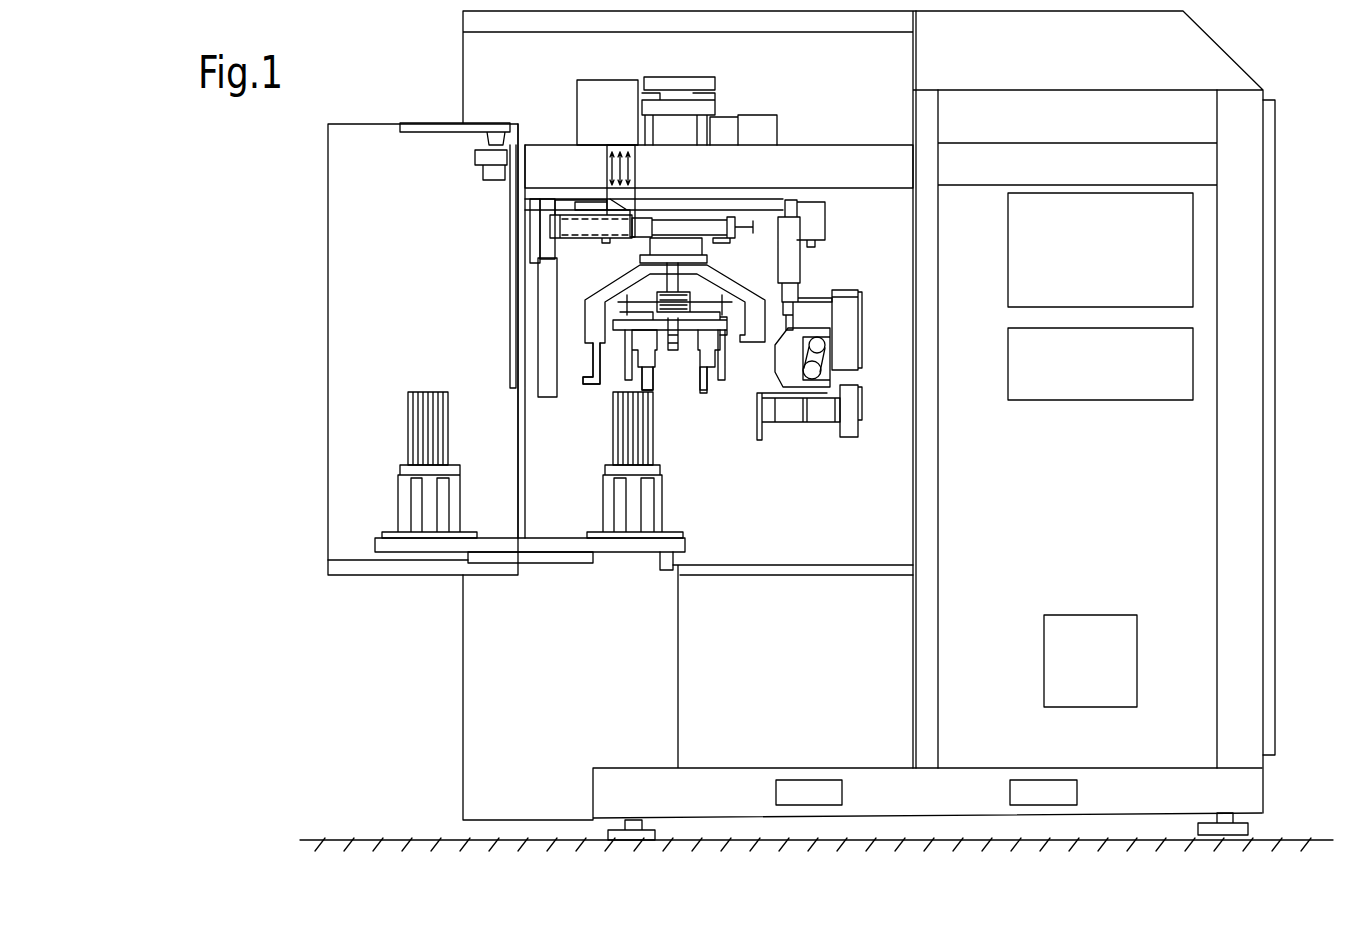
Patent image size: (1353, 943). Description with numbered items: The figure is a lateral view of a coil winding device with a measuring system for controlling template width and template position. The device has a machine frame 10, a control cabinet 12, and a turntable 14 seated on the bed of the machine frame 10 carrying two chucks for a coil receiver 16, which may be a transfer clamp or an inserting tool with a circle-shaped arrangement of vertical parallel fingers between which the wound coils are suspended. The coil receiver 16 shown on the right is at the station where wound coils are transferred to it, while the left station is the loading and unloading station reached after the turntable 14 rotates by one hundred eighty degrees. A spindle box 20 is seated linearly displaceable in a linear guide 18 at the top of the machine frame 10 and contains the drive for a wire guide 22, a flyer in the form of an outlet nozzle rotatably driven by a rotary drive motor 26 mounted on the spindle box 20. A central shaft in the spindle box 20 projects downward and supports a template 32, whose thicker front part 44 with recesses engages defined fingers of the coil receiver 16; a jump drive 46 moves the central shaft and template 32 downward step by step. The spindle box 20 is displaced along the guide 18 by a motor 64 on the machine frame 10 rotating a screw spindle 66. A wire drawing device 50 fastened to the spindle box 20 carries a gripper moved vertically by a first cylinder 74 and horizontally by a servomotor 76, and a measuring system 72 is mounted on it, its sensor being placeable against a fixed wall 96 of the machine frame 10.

The machine frame 10 is at (468, 647).
The control cabinet 12 is at (1188, 495).
The turntable 14 is at (497, 543).
The coil receiver 16 is at (615, 443).
The linear guide 18 is at (795, 160).
The spindle box 20 is at (760, 228).
The wire guide 22 is at (587, 387).
The rotary drive motor 26 is at (577, 97).
The template 32 is at (705, 395).
The front part of the template 44 is at (650, 363).
The jump drive 46 is at (748, 120).
The wire drawing device 50 is at (867, 292).
The motor 64 is at (577, 225).
The screw spindle 66 is at (694, 220).
The measuring system 72 is at (815, 422).
The first cylinder 74 is at (795, 263).
The servomotor 76 is at (820, 342).
The fixed wall 96 is at (913, 480).